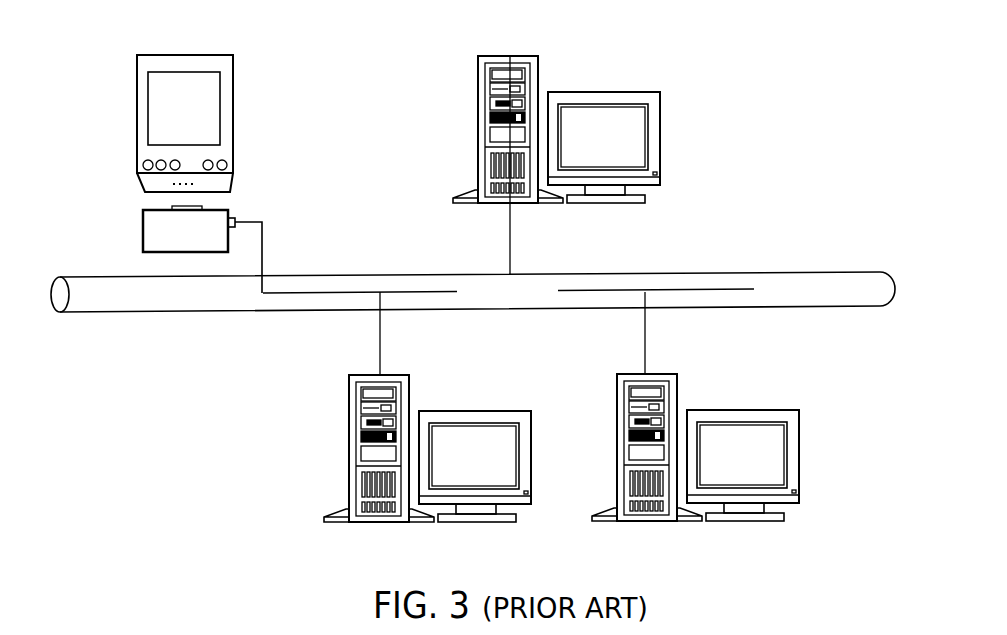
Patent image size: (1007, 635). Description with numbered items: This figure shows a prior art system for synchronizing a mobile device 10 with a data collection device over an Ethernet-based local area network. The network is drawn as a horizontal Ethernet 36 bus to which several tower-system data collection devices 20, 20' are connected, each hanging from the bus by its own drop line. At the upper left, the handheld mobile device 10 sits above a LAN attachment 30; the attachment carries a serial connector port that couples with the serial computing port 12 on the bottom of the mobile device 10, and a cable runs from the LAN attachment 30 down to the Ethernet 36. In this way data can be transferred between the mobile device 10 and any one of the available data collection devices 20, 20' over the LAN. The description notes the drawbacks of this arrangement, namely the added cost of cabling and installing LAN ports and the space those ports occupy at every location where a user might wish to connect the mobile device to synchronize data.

The mobile device 10 is at (258, 85).
The serial computing port 12 is at (197, 184).
The LAN attachment 30 is at (165, 234).
The Ethernet 36 is at (712, 287).
The data collection device 20 is at (580, 157).
The data collection device 20' is at (381, 425).